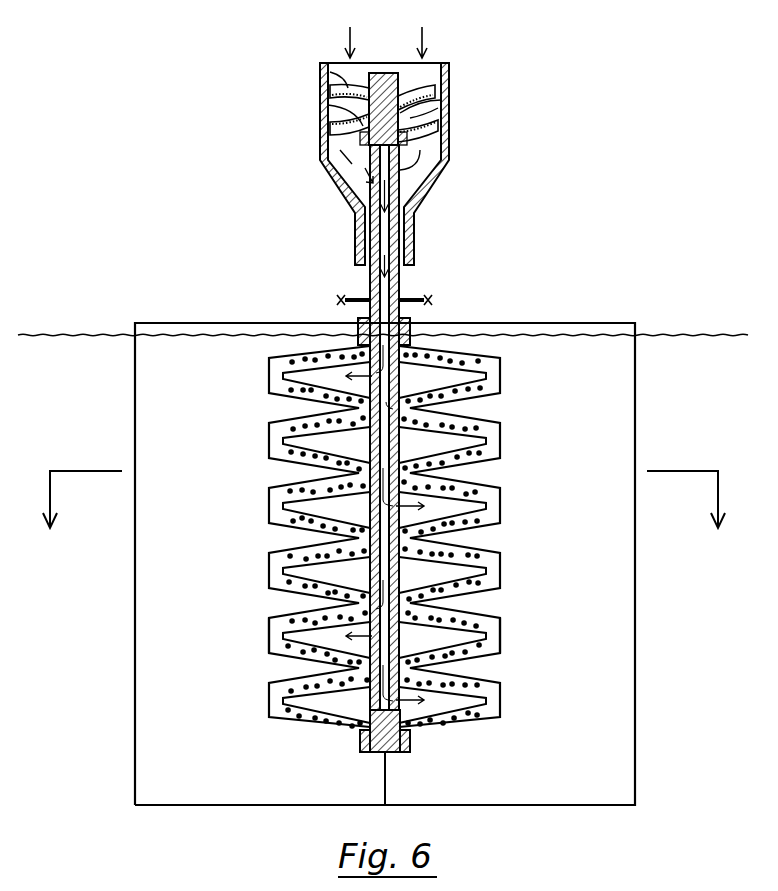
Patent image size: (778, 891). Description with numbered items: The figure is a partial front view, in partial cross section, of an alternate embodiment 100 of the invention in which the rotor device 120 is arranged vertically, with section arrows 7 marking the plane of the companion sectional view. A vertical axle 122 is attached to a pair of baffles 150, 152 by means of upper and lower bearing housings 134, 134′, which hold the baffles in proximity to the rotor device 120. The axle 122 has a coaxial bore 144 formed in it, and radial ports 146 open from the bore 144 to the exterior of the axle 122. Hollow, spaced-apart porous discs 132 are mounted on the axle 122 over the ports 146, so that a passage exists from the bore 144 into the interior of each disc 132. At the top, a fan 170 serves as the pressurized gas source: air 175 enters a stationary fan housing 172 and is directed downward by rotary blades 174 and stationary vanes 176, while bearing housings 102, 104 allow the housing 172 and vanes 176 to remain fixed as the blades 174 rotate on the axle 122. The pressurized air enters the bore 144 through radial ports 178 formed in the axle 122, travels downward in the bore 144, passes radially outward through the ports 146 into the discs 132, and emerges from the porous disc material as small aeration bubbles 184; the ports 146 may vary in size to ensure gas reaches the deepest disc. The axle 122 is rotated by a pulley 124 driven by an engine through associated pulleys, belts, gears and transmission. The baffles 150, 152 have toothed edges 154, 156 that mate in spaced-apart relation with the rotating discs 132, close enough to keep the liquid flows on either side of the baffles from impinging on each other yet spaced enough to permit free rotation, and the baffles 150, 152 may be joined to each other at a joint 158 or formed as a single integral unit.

The alternate embodiment 100 is at (345, 389).
The bearing housing 102 is at (340, 104).
The bearing housing 104 is at (362, 230).
The rotor device 120 is at (387, 495).
The vertical axle 122 is at (402, 282).
The pulley 124 is at (352, 296).
The porous discs 132 is at (292, 444).
The bearing housing 134 is at (356, 325).
The bearing housing 134′ is at (411, 740).
The coaxial bore 144 is at (412, 408).
The radial ports 146 is at (403, 441).
The baffle 150 is at (152, 712).
The baffle 152 is at (617, 708).
The toothed edge 154 is at (269, 631).
The toothed edge 156 is at (502, 632).
The joint 158 is at (386, 786).
The fan 170 is at (401, 143).
The fan housing 172 is at (450, 145).
The rotary blades 174 is at (338, 86).
The air 175 is at (423, 45).
The stationary vanes 176 is at (330, 125).
The radial ports 178 is at (400, 197).
The aeration bubbles 184 is at (300, 558).
The section line 7 is at (383, 524).